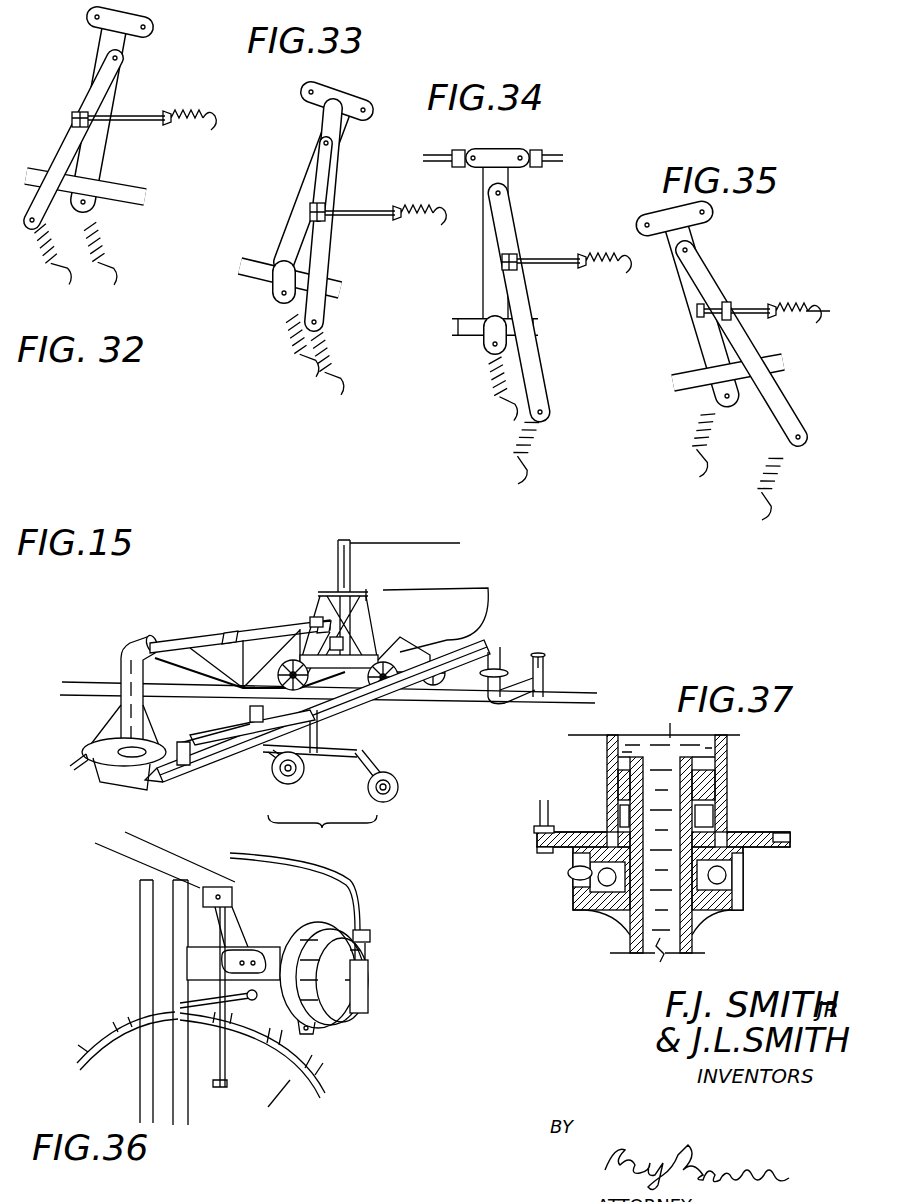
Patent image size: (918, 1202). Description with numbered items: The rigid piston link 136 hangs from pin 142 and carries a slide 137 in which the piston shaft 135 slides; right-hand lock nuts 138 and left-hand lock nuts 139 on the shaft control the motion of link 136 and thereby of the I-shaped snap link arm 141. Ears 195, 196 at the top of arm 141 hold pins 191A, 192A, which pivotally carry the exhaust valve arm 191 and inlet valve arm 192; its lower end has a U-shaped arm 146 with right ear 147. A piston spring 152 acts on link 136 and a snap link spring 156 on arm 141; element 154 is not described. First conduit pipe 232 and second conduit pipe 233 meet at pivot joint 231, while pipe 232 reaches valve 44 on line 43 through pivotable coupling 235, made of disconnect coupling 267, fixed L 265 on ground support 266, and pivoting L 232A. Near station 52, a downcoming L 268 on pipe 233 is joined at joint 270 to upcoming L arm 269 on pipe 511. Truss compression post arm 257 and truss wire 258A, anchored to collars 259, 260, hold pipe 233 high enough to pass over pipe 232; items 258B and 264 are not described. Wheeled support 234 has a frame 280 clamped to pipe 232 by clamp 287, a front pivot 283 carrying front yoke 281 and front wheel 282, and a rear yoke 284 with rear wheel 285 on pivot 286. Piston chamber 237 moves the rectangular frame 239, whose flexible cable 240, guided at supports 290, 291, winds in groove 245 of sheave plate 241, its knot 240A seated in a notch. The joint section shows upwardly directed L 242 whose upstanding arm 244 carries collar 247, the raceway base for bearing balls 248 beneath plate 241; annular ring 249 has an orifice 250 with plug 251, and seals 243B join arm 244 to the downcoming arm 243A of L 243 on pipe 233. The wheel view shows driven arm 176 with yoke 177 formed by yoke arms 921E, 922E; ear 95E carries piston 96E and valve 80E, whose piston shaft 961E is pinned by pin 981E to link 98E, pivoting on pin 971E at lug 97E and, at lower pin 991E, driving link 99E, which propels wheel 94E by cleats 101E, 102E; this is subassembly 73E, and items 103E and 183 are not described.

In FIG. 32, the snap link arm 141 is at (108, 146).
In FIG. 33, the snap link arm 141 is at (292, 250).
In FIG. 34, the snap link arm 141 is at (512, 180).
In FIG. 35, the snap link arm 141 is at (712, 356).
In FIG. 32, the piston link 136 is at (68, 148).
In FIG. 33, the piston link 136 is at (330, 272).
In FIG. 34, the piston link 136 is at (545, 378).
In FIG. 35, the piston link 136 is at (741, 343).
In FIG. 32, the slide 137 is at (98, 114).
In FIG. 33, the slide 137 is at (328, 208).
In FIG. 34, the slide 137 is at (514, 256).
In FIG. 35, the slide 137 is at (763, 312).
In FIG. 32, the left-hand adjustment lock nuts 139 is at (75, 110).
In FIG. 33, the left-hand adjustment lock nuts 139 is at (308, 210).
In FIG. 34, the left-hand adjustment lock nuts 139 is at (500, 260).
In FIG. 32, the piston spring 152 is at (53, 264).
In FIG. 33, the piston spring 152 is at (282, 350).
In FIG. 34, the piston spring 152 is at (485, 385).
In FIG. 35, the piston spring 152 is at (700, 440).
In FIG. 32, the snap link spring 156 is at (104, 250).
In FIG. 33, the snap link spring 156 is at (328, 358).
In FIG. 34, the snap link spring 156 is at (522, 445).
In FIG. 35, the snap link spring 156 is at (762, 500).
In FIG. 33, the pin 142 is at (330, 144).
In FIG. 33, the U-shaped arm 146 is at (244, 275).
In FIG. 33, the right ear 147 is at (340, 288).
In FIG. 34, the right ear 147 is at (540, 322).
In FIG. 33, the left ear 195 is at (318, 90).
In FIG. 33, the right ear 196 is at (368, 106).
In FIG. 33, the piston shaft 135 is at (419, 202).
In FIG. 33, the hook 154 is at (436, 222).
In FIG. 34, the hook 154 is at (610, 268).
In FIG. 34, the right-hand adjustment lock nuts 138 is at (584, 256).
In FIG. 34, the upper exhaust valve arm 191 is at (432, 152).
In FIG. 34, the pin 191A is at (462, 152).
In FIG. 34, the upper inlet valve arm 192 is at (565, 158).
In FIG. 34, the pin 192A is at (536, 152).
In FIG. 15, the line 43 is at (575, 693).
In FIG. 15, the valve 44 is at (546, 668).
In FIG. 15, the station 52 is at (356, 568).
In FIG. 15, the pipe 511 is at (480, 590).
In FIG. 15, the first conduit pipe 232 is at (380, 695).
In FIG. 15, the pivoting L 232A is at (503, 660).
In FIG. 15, the second conduit pipe 233 is at (213, 636).
In FIG. 15, the wheeled support 234 is at (322, 830).
In FIG. 15, the pivotable pipe coupling 235 is at (487, 645).
In FIG. 37, the pivotable pipe coupling 235 is at (740, 799).
In FIG. 15, the piston chamber 237 is at (250, 712).
In FIG. 15, the rectangular frame 239 is at (205, 735).
In FIG. 15, the flexible cable 240 is at (205, 765).
In FIG. 37, the flexible cable 240 is at (790, 842).
In FIG. 37, the knot 240A is at (540, 820).
In FIG. 15, the sheave plate 241 is at (82, 760).
In FIG. 37, the sheave plate 241 is at (785, 833).
In FIG. 15, the upwardly directed L 242 is at (115, 775).
In FIG. 15, the downwardly directed L 243 is at (135, 642).
In FIG. 15, the downcoming arm 243A is at (126, 722).
In FIG. 37, the downcoming arm 243A is at (715, 790).
In FIG. 37, the seals 243B is at (620, 790).
In FIG. 37, the upstanding arm 244 is at (692, 936).
In FIG. 37, the groove 245 is at (540, 850).
In FIG. 37, the collar 247 is at (760, 925).
In FIG. 37, the bearing balls 248 is at (615, 918).
In FIG. 37, the annular ring 249 is at (745, 880).
In FIG. 37, the orifice 250 is at (572, 878).
In FIG. 37, the plug 251 is at (600, 882).
In FIG. 15, the truss compression post arm 257 is at (188, 665).
In FIG. 15, the truss wire 258A is at (224, 640).
In FIG. 15, the collar 258B is at (320, 630).
In FIG. 15, the collar 259 is at (151, 636).
In FIG. 15, the collar 260 is at (312, 617).
In FIG. 15, the elbow 264 is at (540, 680).
In FIG. 15, the fixed L 265 is at (490, 690).
In FIG. 15, the ground support 266 is at (494, 705).
In FIG. 15, the disconnect coupling 267 is at (500, 700).
In FIG. 15, the downcoming L 268 is at (315, 600).
In FIG. 15, the upcoming L arm 269 is at (403, 648).
In FIG. 15, the pivotal joint 270 is at (345, 640).
In FIG. 15, the frame 280 is at (345, 750).
In FIG. 15, the front yoke 281 is at (274, 786).
In FIG. 15, the front wheel 282 is at (290, 785).
In FIG. 15, the front pivot 283 is at (282, 768).
In FIG. 15, the rear yoke 284 is at (372, 780).
In FIG. 15, the rear wheel 285 is at (375, 796).
In FIG. 15, the pivot 286 is at (370, 757).
In FIG. 15, the clamp 287 is at (320, 722).
In FIG. 15, the cable guide roll support 290 is at (198, 775).
In FIG. 15, the cable guide roll support 291 is at (152, 787).
In FIG. 37, the pivot joint 231 is at (630, 965).
In FIG. 36, the driven arm 176 is at (120, 866).
In FIG. 36, the yoke 177 is at (147, 945).
In FIG. 36, the yoke arm 921E is at (146, 1090).
In FIG. 36, the upper fixed pivot pin 971E is at (222, 893).
In FIG. 36, the lug 97E is at (212, 888).
In FIG. 36, the ear 95E is at (200, 975).
In FIG. 36, the link 98E is at (243, 955).
In FIG. 36, the pin 981E is at (243, 958).
In FIG. 36, the piston shaft 961E is at (256, 958).
In FIG. 36, the piston 96E is at (314, 1032).
In FIG. 36, the valve 80E is at (368, 970).
In FIG. 36, the hose 183 is at (352, 886).
In FIG. 36, the drive link 99E is at (182, 1003).
In FIG. 36, the cleat 101E is at (115, 1022).
In FIG. 36, the wheel 94E is at (76, 1058).
In FIG. 36, the rail 103E is at (295, 1040).
In FIG. 36, the yoke arm 922E is at (268, 1107).
In FIG. 36, the cleat 102E is at (220, 1088).
In FIG. 36, the lower pin 991E is at (252, 1000).
In FIG. 36, the subassembly 73E is at (386, 1043).